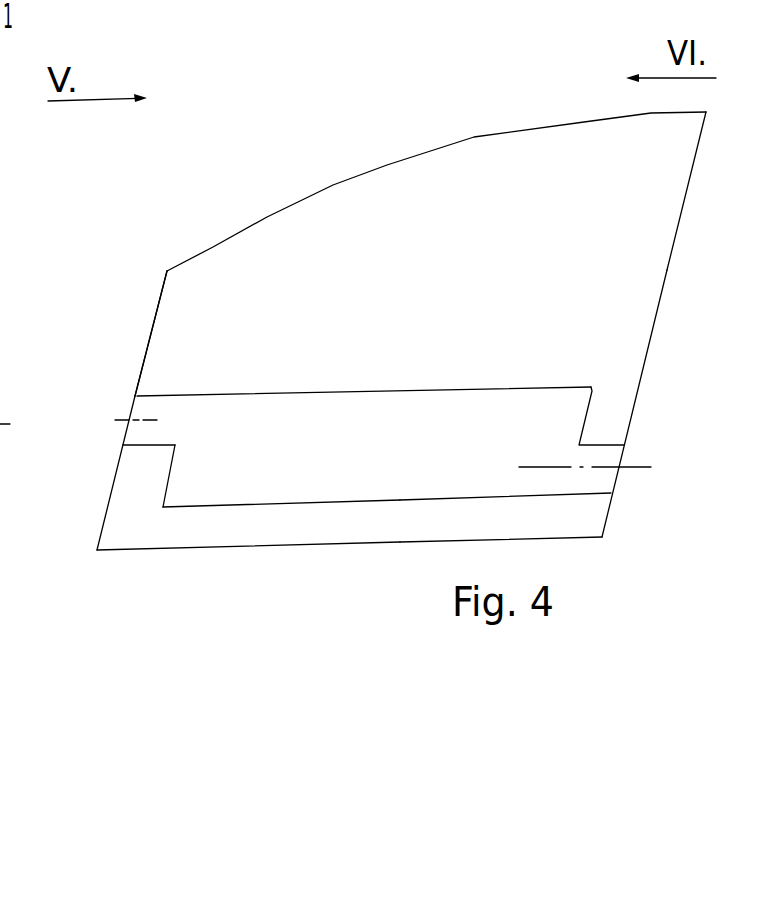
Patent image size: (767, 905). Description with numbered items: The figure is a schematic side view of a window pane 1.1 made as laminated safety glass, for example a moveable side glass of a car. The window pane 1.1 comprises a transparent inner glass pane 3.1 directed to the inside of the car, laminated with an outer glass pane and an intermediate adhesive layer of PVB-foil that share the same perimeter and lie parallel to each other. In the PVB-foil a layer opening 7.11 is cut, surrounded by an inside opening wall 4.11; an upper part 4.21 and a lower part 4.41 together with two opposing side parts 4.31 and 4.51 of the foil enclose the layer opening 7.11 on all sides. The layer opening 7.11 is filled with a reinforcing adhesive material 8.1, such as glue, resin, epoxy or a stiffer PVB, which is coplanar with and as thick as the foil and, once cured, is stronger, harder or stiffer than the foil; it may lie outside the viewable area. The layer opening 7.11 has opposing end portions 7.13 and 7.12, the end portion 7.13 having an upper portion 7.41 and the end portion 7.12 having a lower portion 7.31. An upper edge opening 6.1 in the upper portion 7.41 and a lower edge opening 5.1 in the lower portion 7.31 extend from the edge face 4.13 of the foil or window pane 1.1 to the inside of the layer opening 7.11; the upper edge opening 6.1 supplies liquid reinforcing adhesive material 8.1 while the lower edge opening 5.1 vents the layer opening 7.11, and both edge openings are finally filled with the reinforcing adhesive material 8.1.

The window pane 1.1 is at (361, 212).
The inner glass pane 3.1 is at (634, 320).
The inside opening wall 4.11 is at (233, 392).
The edge face 4.13 is at (676, 270).
The upper part 4.21 is at (471, 170).
The side part 4.31 is at (616, 415).
The lower part 4.41 is at (373, 518).
The side part 4.51 is at (128, 478).
The lower edge opening 5.1 is at (591, 482).
The upper edge opening 6.1 is at (148, 406).
The layer opening 7.11 is at (336, 478).
The end portion 7.12 is at (589, 413).
The end portion 7.13 is at (167, 473).
The lower portion 7.31 is at (606, 497).
The upper portion 7.41 is at (124, 395).
The reinforcing adhesive material 8.1 is at (205, 490).